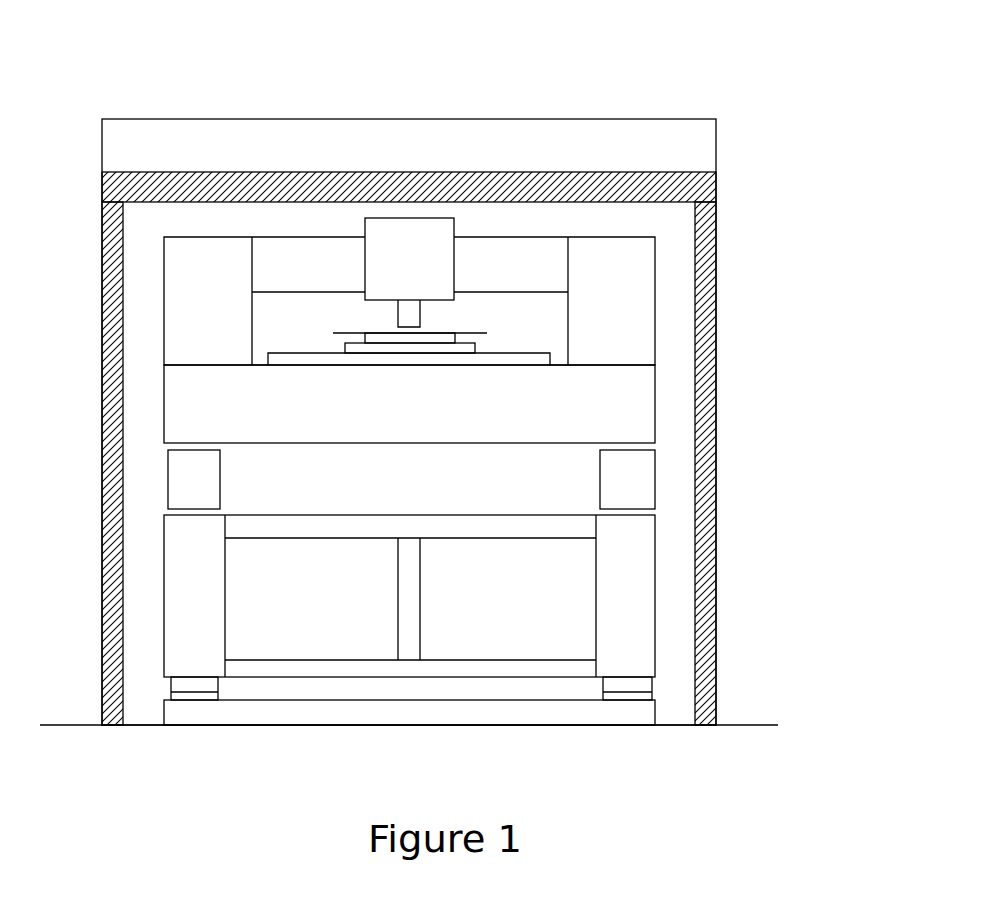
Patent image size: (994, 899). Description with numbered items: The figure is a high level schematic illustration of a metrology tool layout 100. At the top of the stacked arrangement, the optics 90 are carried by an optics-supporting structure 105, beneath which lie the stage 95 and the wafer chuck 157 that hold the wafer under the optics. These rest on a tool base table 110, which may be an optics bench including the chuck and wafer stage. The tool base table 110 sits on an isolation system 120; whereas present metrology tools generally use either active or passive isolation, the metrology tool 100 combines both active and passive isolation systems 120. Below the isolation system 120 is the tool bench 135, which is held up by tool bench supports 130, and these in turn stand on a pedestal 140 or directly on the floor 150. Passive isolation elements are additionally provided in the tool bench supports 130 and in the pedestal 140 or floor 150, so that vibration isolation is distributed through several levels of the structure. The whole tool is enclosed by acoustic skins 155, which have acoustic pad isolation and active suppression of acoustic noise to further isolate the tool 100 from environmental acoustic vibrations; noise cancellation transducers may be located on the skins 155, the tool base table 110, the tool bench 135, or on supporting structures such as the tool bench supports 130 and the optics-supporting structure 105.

The metrology tool layout 100 is at (85, 49).
The acoustic skins 155 is at (684, 186).
The optics-supporting structure 105 is at (617, 298).
The optics 90 is at (409, 218).
The wafer chuck 157 is at (348, 333).
The stage 95 is at (337, 348).
The tool base table 110 is at (615, 403).
The isolation system 120 is at (615, 477).
The tool bench supports 130 is at (615, 553).
The tool bench 135 is at (568, 622).
The pedestal 140 is at (630, 715).
The floor 150 is at (717, 750).